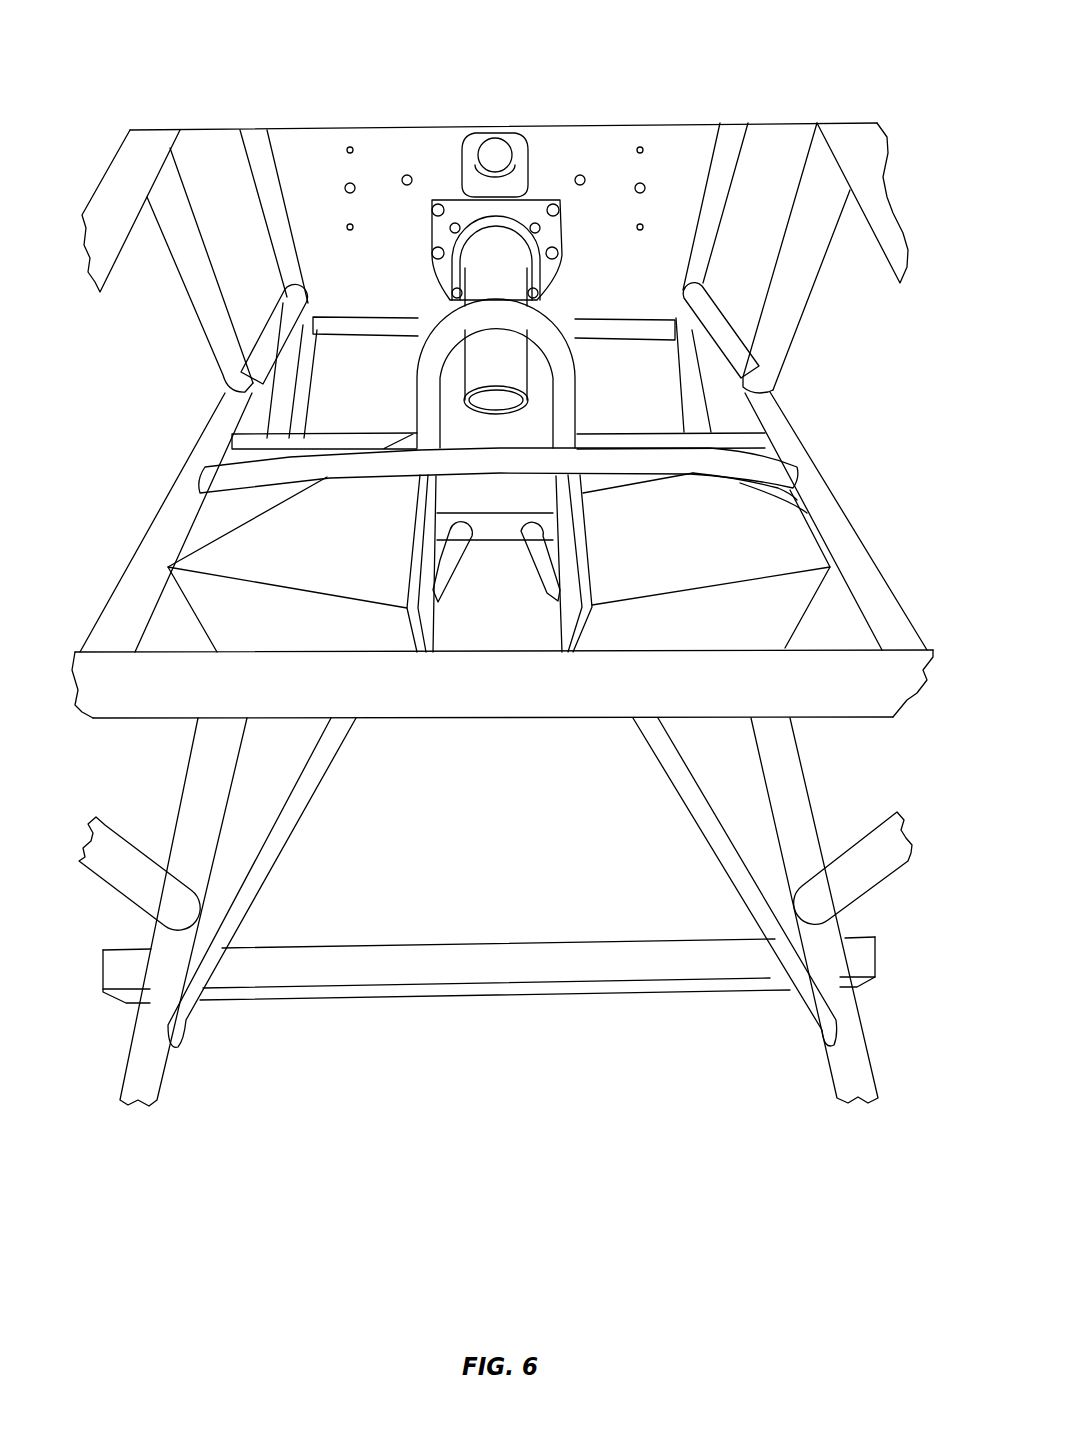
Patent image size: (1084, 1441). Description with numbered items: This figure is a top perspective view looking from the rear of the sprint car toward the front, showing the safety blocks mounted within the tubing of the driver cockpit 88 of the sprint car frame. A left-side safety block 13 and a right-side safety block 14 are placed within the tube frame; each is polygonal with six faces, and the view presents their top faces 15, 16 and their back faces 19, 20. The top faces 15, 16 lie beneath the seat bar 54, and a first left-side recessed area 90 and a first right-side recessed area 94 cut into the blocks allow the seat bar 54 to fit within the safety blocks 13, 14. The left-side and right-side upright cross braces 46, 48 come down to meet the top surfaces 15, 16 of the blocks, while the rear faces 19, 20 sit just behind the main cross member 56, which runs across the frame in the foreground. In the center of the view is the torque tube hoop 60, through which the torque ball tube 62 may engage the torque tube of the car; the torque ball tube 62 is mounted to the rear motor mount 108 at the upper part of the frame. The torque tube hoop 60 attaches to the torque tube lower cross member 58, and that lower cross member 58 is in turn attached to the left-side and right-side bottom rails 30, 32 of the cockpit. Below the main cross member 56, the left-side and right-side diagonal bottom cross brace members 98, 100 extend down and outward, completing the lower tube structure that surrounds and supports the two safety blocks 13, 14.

The driver cockpit 88 is at (517, 50).
The rear motor mount 108 is at (386, 285).
The torque ball tube 62 is at (510, 292).
The left-side upright cross brace 46 is at (262, 365).
The seat bar 54 is at (778, 462).
The torque tube hoop 60 is at (572, 412).
The torque tube lower cross member 58 is at (483, 523).
The first right-side recessed area 94 is at (753, 487).
The first left-side recessed area 90 is at (205, 487).
The top face 15 is at (338, 566).
The top face 16 is at (708, 566).
The back face 19 is at (272, 626).
The back face 20 is at (739, 626).
The left-side safety block 13 is at (335, 648).
The right-side safety block 14 is at (655, 648).
The main cross member 56 is at (490, 703).
The right-side upright cross brace 48 is at (887, 640).
The left bottom rail 30 is at (147, 875).
The right-side bottom rail 32 is at (848, 873).
The left-side diagonal bottom cross brace member 98 is at (283, 840).
The right-side diagonal bottom cross brace member 100 is at (720, 847).